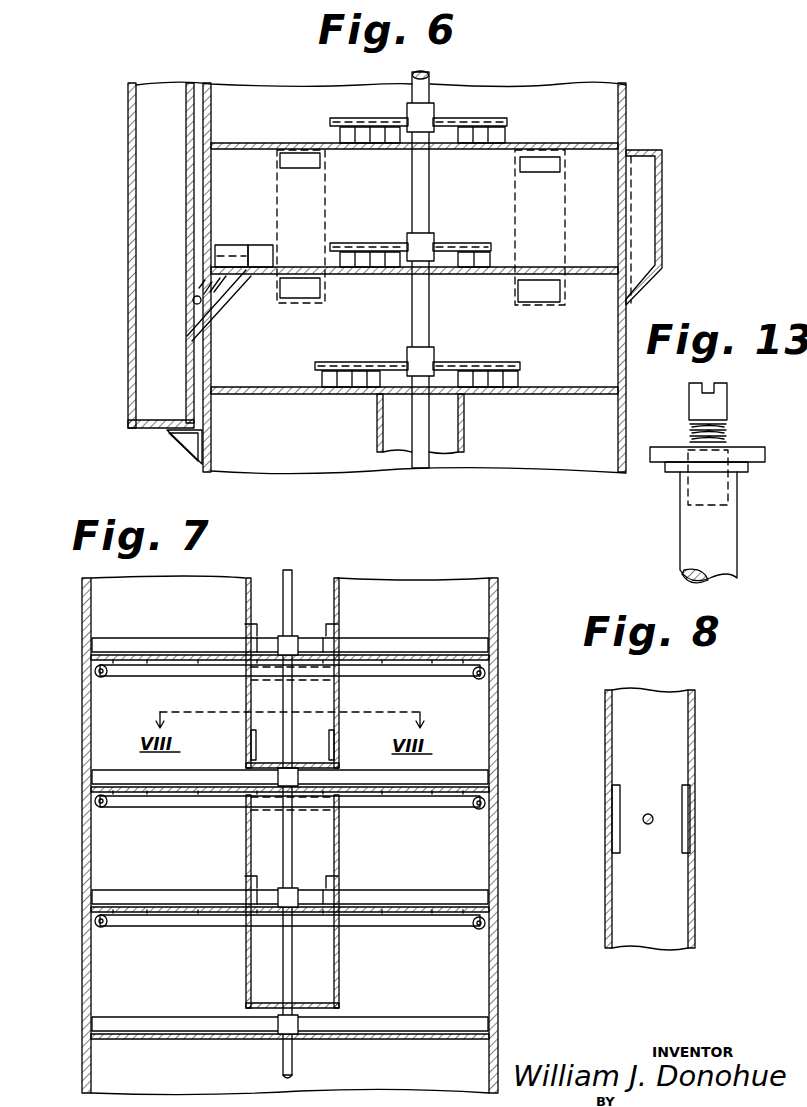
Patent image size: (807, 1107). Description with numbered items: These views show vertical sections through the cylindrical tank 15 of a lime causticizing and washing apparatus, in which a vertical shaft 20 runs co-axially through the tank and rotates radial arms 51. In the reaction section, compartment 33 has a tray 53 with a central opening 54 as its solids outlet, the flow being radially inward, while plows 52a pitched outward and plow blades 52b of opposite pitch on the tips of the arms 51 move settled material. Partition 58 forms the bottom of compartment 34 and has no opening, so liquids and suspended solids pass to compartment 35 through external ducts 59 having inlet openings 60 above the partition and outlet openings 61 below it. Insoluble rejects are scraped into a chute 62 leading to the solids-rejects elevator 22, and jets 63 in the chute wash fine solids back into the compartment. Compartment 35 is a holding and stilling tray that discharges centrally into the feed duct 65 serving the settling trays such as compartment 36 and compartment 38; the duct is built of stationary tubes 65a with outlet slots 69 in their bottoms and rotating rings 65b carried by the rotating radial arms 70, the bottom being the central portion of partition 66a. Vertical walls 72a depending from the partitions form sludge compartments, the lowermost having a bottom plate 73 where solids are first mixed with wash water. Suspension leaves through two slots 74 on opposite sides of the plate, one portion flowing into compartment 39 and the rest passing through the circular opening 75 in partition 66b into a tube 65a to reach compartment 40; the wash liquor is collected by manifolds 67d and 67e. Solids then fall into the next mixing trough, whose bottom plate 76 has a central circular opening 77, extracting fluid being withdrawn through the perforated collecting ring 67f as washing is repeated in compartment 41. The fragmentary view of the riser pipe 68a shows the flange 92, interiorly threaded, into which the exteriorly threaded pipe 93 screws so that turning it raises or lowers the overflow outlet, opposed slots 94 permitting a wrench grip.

In FIG. 6, the cylindrical tank 15 is at (628, 113).
In FIG. 7, the cylindrical tank 15 is at (499, 703).
In FIG. 6, the vertical shaft 20 is at (432, 82).
In FIG. 7, the vertical shaft 20 is at (295, 575).
In FIG. 8, the vertical shaft 20 is at (655, 816).
In FIG. 6, the solids-rejects elevator 22 is at (128, 211).
In FIG. 6, the compartment 33 is at (414, 124).
In FIG. 6, the compartment 34 is at (233, 232).
In FIG. 6, the compartment 35 is at (414, 309).
In FIG. 6, the compartment 36 is at (414, 416).
In FIG. 7, the compartment 38 is at (118, 607).
In FIG. 7, the compartment 39 is at (119, 725).
In FIG. 7, the compartment 40 is at (118, 845).
In FIG. 7, the compartment 41 is at (118, 975).
In FIG. 6, the radial arms 51 is at (380, 124).
In FIG. 6, the plows 52a is at (355, 292).
In FIG. 6, the plow blades 52b is at (330, 128).
In FIG. 6, the tray 53 is at (596, 124).
In FIG. 6, the central opening 54 is at (448, 160).
In FIG. 6, the partition 58 is at (604, 272).
In FIG. 6, the external ducts 59 is at (326, 205).
In FIG. 6, the inlet openings 60 is at (300, 166).
In FIG. 6, the outlet openings 61 is at (316, 298).
In FIG. 6, the chute 62 is at (236, 290).
In FIG. 6, the jets 63 is at (193, 302).
In FIG. 6, the feed duct 65 is at (465, 428).
In FIG. 7, the stationary tubes 65a is at (340, 598).
In FIG. 7, the rotating rings 65b is at (368, 646).
In FIG. 7, the partition 66a is at (217, 661).
In FIG. 7, the partition 66b is at (178, 792).
In FIG. 7, the manifold 67d is at (96, 674).
In FIG. 7, the manifold 67e is at (96, 804).
In FIG. 7, the perforated collecting ring 67f is at (96, 924).
In FIG. 13, the riser pipe 68a is at (692, 533).
In FIG. 7, the outlet slots 69 is at (248, 631).
In FIG. 7, the rotating radial arms 70 is at (484, 638).
In FIG. 7, the vertical walls 72a is at (340, 702).
In FIG. 8, the vertical walls 72a is at (608, 764).
In FIG. 7, the bottom plate 73 is at (310, 762).
In FIG. 8, the bottom plate 73 is at (660, 732).
In FIG. 7, the slots 74 is at (252, 734).
In FIG. 8, the slots 74 is at (618, 820).
In FIG. 7, the circular opening 75 is at (298, 792).
In FIG. 7, the bottom plate 76 is at (312, 1005).
In FIG. 7, the circular opening 77 is at (298, 1000).
In FIG. 13, the flange 92 is at (755, 455).
In FIG. 13, the pipe 93 is at (720, 407).
In FIG. 13, the slots 94 is at (708, 389).